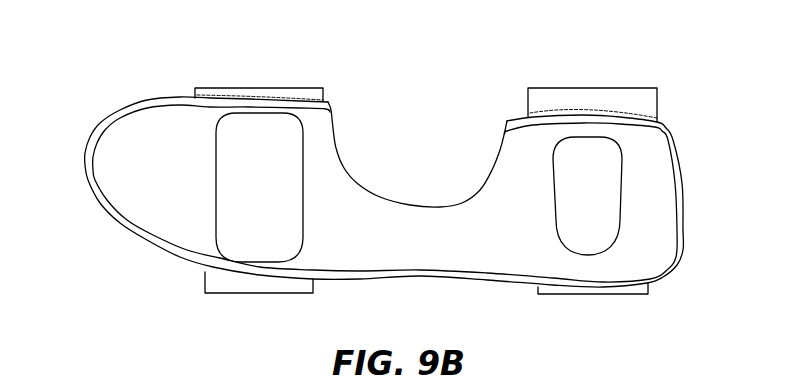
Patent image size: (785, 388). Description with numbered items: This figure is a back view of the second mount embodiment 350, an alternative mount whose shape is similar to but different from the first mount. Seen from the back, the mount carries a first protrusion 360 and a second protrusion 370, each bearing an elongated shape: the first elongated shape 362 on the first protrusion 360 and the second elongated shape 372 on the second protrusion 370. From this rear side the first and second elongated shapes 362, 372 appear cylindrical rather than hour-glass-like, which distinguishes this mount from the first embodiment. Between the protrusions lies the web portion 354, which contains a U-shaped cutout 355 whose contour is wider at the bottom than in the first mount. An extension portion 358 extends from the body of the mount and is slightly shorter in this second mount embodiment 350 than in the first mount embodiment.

The second mount embodiment 350 is at (607, 70).
The web portion 354 is at (427, 279).
The U-shaped cutout 355 is at (480, 182).
The extension portion 358 is at (84, 156).
The first protrusion 360 is at (662, 98).
The first elongated shape 362 is at (622, 197).
The second protrusion 370 is at (328, 90).
The second elongated shape 372 is at (216, 187).